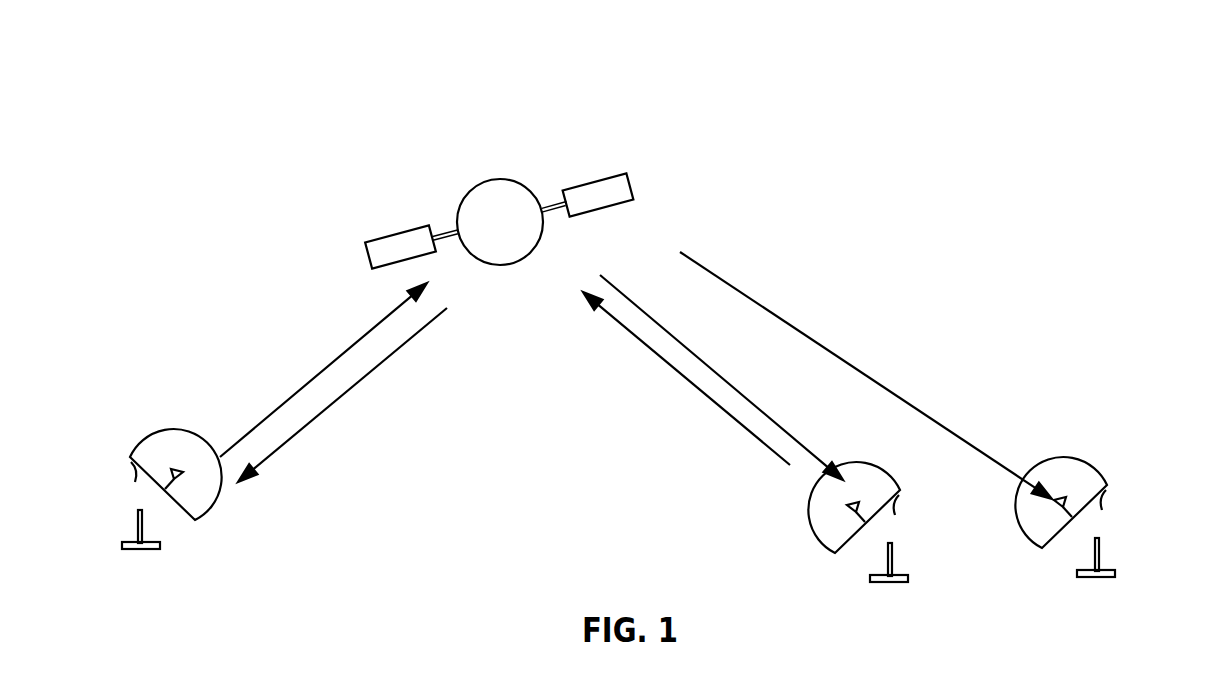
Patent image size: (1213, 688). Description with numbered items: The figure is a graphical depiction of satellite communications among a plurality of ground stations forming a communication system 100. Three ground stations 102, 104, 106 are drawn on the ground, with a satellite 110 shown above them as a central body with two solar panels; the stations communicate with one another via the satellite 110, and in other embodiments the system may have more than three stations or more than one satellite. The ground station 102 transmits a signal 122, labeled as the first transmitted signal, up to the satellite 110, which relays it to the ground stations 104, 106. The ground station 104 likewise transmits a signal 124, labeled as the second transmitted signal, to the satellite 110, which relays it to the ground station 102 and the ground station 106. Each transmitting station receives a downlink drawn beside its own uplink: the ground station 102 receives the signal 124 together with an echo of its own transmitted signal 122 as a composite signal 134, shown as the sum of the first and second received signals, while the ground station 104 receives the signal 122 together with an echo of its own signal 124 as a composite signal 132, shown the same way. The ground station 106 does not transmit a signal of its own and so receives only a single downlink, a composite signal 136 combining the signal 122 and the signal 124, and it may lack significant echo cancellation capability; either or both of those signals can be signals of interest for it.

The communication system 100 is at (738, 58).
The satellite 110 is at (487, 192).
The ground station 102 is at (130, 460).
The ground station 104 is at (900, 505).
The ground station 106 is at (1107, 495).
The signal 122 is at (260, 423).
The signal 124 is at (750, 432).
The composite signal 132 is at (653, 320).
The composite signal 134 is at (298, 433).
The composite signal 136 is at (813, 342).